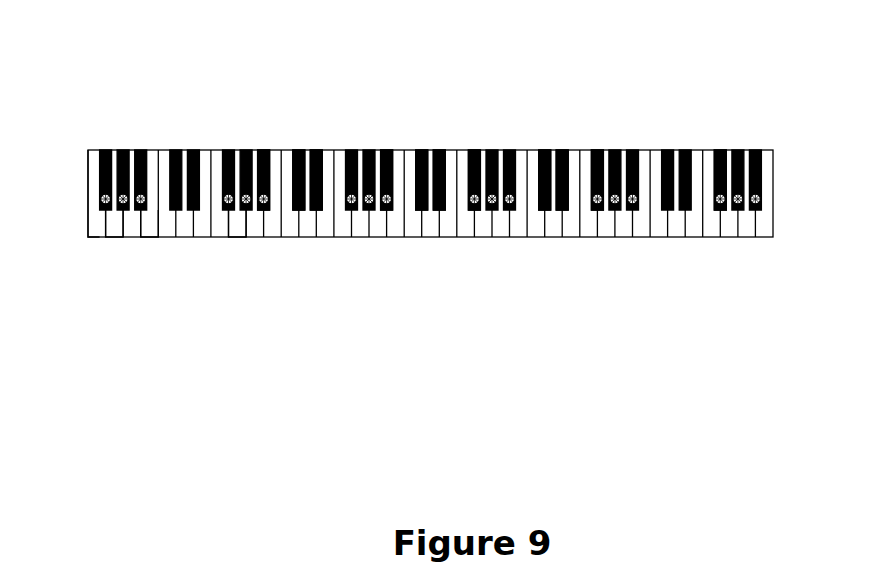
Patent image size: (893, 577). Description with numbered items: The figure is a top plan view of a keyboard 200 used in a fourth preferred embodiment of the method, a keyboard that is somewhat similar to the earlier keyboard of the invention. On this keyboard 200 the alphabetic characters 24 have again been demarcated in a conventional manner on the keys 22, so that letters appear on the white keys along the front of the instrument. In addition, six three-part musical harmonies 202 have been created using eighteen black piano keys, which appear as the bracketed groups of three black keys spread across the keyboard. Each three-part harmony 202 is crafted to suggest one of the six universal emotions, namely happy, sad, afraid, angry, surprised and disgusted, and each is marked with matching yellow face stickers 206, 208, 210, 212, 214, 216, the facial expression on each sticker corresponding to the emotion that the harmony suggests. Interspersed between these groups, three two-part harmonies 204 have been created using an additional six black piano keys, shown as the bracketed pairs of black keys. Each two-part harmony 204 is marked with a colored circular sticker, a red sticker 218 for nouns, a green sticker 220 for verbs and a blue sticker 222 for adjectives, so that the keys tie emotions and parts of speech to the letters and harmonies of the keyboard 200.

The keyboard 200 is at (783, 115).
The 3 part musical harmony 202 is at (763, 150).
The 2-part harmony 204 is at (567, 150).
The yellow face sticker 206 is at (88, 206).
The keys 22 is at (155, 240).
The alphabetic characters 24 is at (238, 245).
The yellow face sticker 208 is at (278, 208).
The yellow face sticker 210 is at (399, 204).
The yellow face sticker 212 is at (474, 222).
The yellow face sticker 214 is at (592, 214).
The yellow face sticker 216 is at (713, 223).
The red circular sticker 218 is at (299, 160).
The green circular sticker 220 is at (418, 152).
The blue circular sticker 222 is at (539, 152).